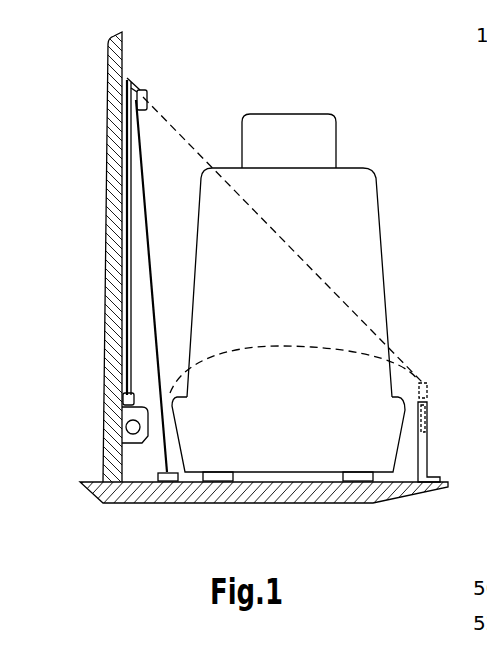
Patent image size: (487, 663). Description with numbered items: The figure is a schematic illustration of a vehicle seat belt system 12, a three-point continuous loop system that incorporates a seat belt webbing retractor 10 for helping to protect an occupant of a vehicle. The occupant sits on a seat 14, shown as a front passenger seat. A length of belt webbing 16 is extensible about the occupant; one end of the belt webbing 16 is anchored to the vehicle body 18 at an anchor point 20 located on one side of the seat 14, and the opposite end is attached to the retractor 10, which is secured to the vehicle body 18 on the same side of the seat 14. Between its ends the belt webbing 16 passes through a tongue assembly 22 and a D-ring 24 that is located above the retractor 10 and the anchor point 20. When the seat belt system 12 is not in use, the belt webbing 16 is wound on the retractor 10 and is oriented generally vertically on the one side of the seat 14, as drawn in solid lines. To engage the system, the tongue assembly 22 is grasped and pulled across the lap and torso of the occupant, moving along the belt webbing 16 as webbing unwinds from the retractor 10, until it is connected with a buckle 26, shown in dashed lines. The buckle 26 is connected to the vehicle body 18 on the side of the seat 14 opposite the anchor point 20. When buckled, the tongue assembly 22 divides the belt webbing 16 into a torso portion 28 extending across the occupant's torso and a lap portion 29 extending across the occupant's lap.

The seat belt webbing retractor 10 is at (121, 426).
The three-point continuous loop seat belt system 12 is at (372, 128).
The seat 14 is at (363, 178).
The belt webbing 16 is at (152, 263).
The vehicle body 18 is at (107, 498).
The anchor point 20 is at (180, 468).
The tongue assembly 22 is at (150, 100).
The D-ring 24 is at (130, 72).
The buckle 26 is at (428, 435).
The torso portion 28 is at (325, 281).
The lap portion 29 is at (303, 345).